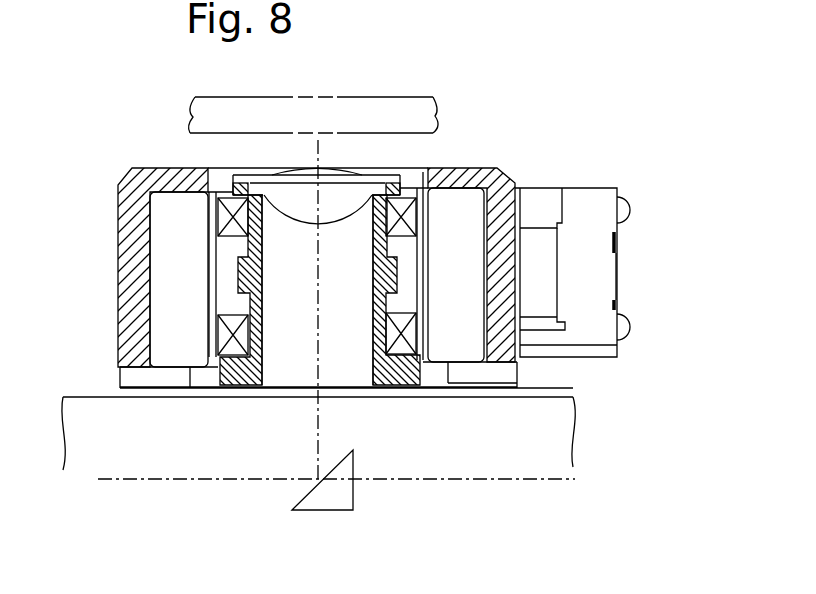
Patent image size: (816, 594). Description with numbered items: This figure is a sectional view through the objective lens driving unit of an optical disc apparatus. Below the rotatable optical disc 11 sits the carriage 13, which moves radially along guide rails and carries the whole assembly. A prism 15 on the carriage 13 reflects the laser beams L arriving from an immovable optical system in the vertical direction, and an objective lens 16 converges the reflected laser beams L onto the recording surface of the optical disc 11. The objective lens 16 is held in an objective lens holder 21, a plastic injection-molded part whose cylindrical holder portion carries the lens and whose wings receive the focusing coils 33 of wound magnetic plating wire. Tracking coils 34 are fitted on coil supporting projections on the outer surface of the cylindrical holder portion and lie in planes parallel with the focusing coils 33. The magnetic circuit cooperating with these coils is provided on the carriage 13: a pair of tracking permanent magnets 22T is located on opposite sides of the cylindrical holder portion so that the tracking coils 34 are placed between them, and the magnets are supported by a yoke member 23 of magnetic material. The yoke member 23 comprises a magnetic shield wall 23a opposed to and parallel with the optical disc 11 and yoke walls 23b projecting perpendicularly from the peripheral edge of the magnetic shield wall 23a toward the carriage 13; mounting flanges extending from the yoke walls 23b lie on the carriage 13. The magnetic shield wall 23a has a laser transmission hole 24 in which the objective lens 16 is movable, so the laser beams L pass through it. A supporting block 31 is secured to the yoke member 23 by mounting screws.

The optical disc 11 is at (446, 107).
The carriage 13 is at (88, 408).
The prism 15 is at (350, 490).
The objective lens 16 is at (328, 212).
The objective lens holder 21 is at (382, 395).
The tracking permanent magnets 22T is at (468, 355).
The yoke member 23 is at (122, 239).
The magnetic shield wall 23a is at (160, 177).
The yoke walls 23b is at (130, 288).
The laser transmission hole 24 is at (424, 172).
The supporting block 31 is at (600, 275).
The focusing coils 33 is at (230, 336).
The tracking coils 34 is at (415, 332).
The laser beams L is at (165, 479).